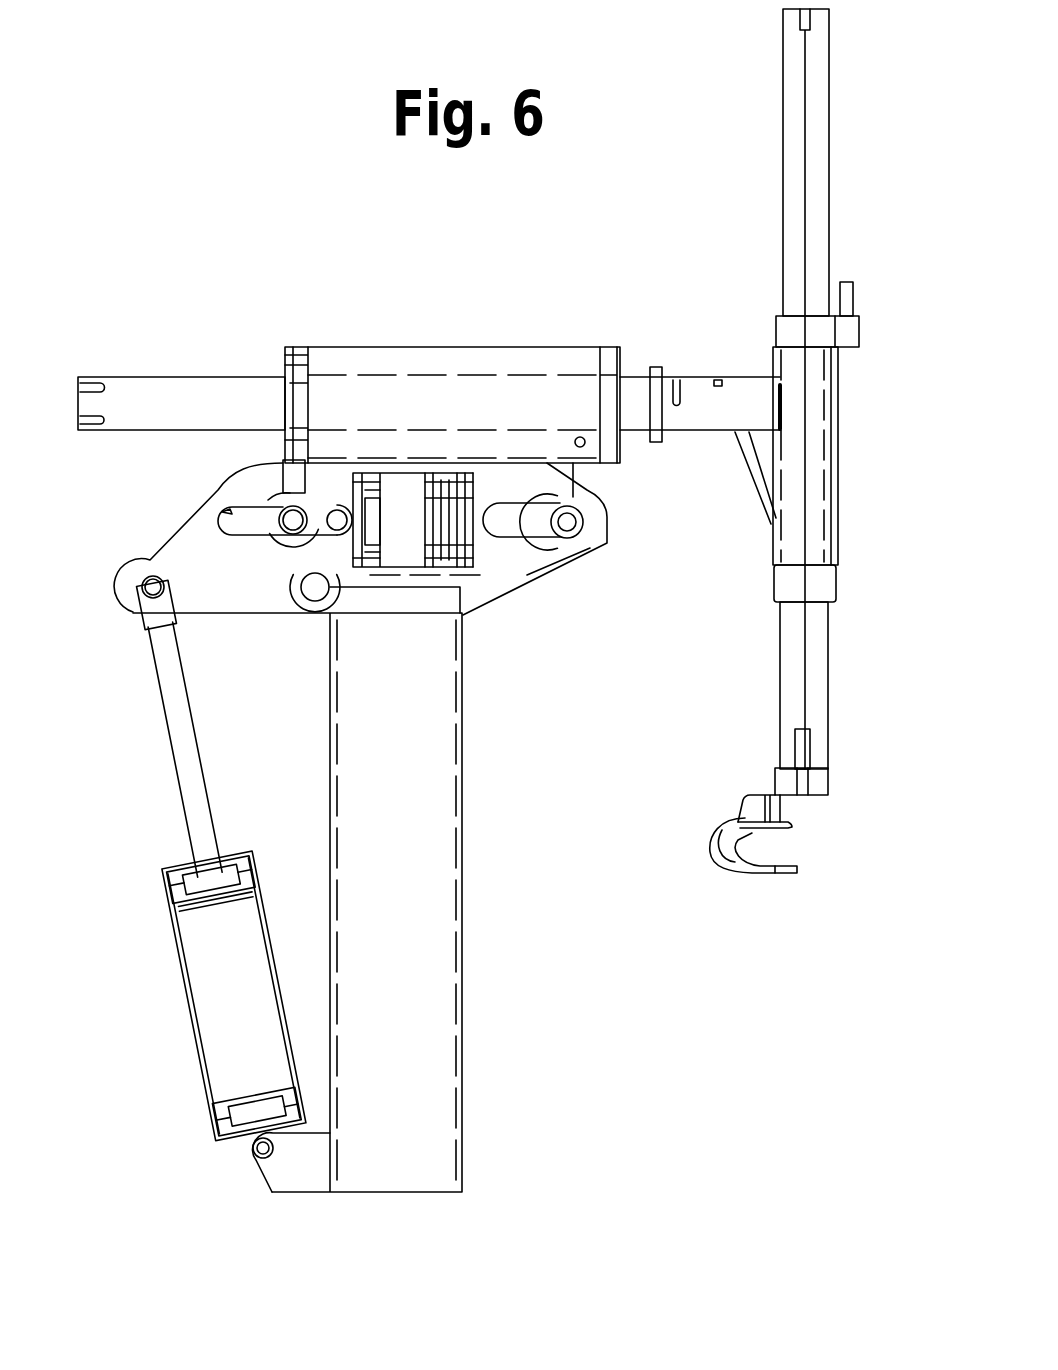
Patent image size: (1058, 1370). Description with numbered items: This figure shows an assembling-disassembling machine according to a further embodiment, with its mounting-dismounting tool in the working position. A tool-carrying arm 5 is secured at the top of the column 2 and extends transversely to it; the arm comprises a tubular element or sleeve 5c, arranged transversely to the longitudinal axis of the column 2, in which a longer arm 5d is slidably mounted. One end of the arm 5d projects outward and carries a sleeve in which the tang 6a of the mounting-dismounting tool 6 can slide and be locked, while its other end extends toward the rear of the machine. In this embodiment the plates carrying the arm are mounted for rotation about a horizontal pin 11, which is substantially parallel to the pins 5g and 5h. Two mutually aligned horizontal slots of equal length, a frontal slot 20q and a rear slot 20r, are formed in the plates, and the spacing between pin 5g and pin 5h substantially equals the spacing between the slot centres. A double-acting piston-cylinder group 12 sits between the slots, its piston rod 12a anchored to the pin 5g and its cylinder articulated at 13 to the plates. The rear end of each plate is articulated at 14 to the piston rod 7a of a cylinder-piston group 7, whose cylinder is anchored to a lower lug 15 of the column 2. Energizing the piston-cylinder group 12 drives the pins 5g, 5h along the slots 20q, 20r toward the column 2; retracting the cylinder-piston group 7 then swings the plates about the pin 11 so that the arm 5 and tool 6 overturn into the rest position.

The column 2 is at (458, 1000).
The tool-carrying arm 5 is at (458, 338).
The tubular element 5c is at (395, 358).
The arm 5d is at (707, 411).
The pin 5g is at (569, 532).
The pin 5h is at (281, 510).
The mounting-dismounting tool 6 is at (722, 847).
The tang 6a is at (793, 636).
The cylinder-piston group 7 is at (183, 988).
The piston rod 7a is at (183, 737).
The horizontal pin 11 is at (313, 590).
The double-acting piston-cylinder group 12 is at (408, 519).
The piston rod 12a is at (478, 523).
The articulation of cylinder to plates 13 is at (328, 512).
The articulation of plate to piston rod 14 is at (141, 590).
The lower lug 15 is at (305, 1175).
The frontal slot 20q is at (522, 517).
The rear slot 20r is at (232, 508).